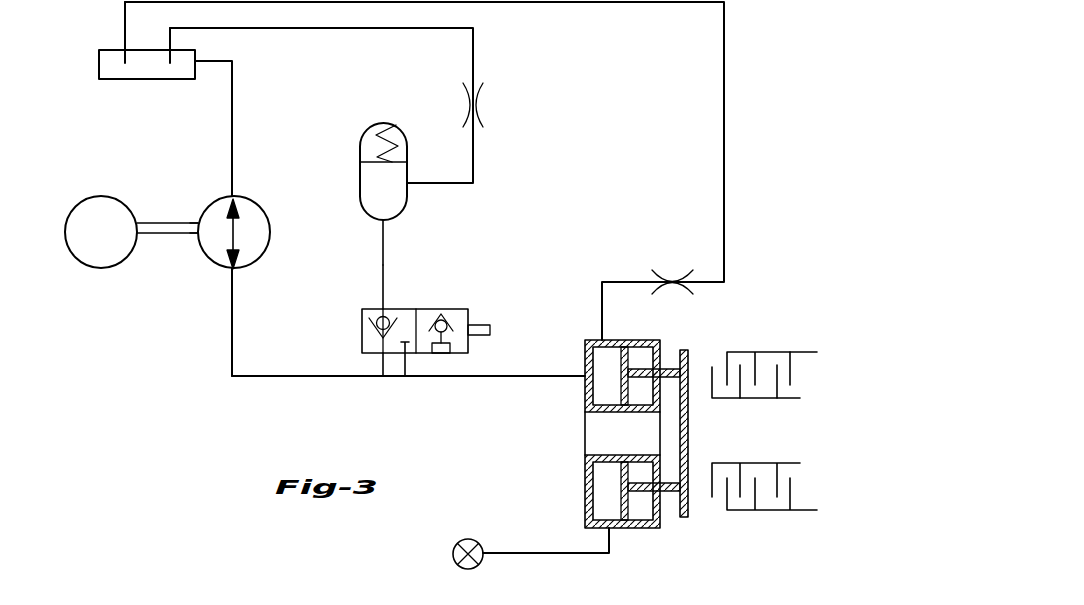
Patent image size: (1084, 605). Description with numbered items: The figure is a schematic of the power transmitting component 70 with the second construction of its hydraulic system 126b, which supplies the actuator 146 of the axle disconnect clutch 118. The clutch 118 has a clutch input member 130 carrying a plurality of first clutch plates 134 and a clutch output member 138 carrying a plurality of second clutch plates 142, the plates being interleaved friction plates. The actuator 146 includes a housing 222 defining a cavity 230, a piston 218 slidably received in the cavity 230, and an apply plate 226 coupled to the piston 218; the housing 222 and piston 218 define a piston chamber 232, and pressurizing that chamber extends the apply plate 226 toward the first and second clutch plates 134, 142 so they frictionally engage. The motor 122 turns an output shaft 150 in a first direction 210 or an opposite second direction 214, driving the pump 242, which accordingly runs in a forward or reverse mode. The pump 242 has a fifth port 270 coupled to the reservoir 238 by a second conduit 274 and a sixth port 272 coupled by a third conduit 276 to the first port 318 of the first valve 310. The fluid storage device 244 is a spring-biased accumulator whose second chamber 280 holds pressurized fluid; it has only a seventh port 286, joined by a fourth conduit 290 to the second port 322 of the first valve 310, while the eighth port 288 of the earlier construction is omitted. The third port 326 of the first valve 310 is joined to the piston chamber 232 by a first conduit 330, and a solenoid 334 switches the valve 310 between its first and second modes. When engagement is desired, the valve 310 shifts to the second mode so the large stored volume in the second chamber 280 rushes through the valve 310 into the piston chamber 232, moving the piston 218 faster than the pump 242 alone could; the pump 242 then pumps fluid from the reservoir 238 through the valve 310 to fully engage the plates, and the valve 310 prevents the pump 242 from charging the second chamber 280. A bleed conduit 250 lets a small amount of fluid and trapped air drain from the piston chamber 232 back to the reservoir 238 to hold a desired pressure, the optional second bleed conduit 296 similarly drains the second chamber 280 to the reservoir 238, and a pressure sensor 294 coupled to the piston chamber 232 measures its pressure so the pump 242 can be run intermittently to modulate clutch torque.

The power transmitting component 70 is at (788, 112).
The second clutch 118 is at (786, 390).
The motor 122 is at (72, 258).
The hydraulic system 126b is at (216, 384).
The clutch input member 130 is at (803, 350).
The first clutch plates 134 is at (793, 373).
The clutch output member 138 is at (783, 398).
The second clutch plates 142 is at (775, 380).
The actuator 146 is at (586, 487).
The output shaft 150 is at (170, 233).
The first direction 210 is at (151, 256).
The second direction 214 is at (178, 253).
The piston 218 is at (617, 498).
The housing 222 is at (585, 463).
The apply plate 226 is at (688, 363).
The cavity 230 is at (640, 350).
The piston chamber 232 is at (605, 390).
The reservoir 238 is at (99, 61).
The pump 242 is at (205, 258).
The fluid storage device 244 is at (368, 145).
The bleed conduit 250 is at (724, 124).
The fifth port 270 is at (235, 197).
The sixth port 272 is at (238, 268).
The second conduit 274 is at (232, 94).
The third conduit 276 is at (232, 362).
The second chamber 280 is at (378, 167).
The seventh port 286 is at (383, 225).
The eighth port 288 is at (397, 160).
The fourth conduit 290 is at (383, 278).
The pressure sensor 294 is at (455, 546).
The second bleed conduit 296 is at (473, 62).
The first valve 310 is at (431, 318).
The first port 318 is at (381, 358).
The second port 322 is at (383, 309).
The third port 326 is at (405, 355).
The first conduit 330 is at (518, 377).
The solenoid 334 is at (490, 330).